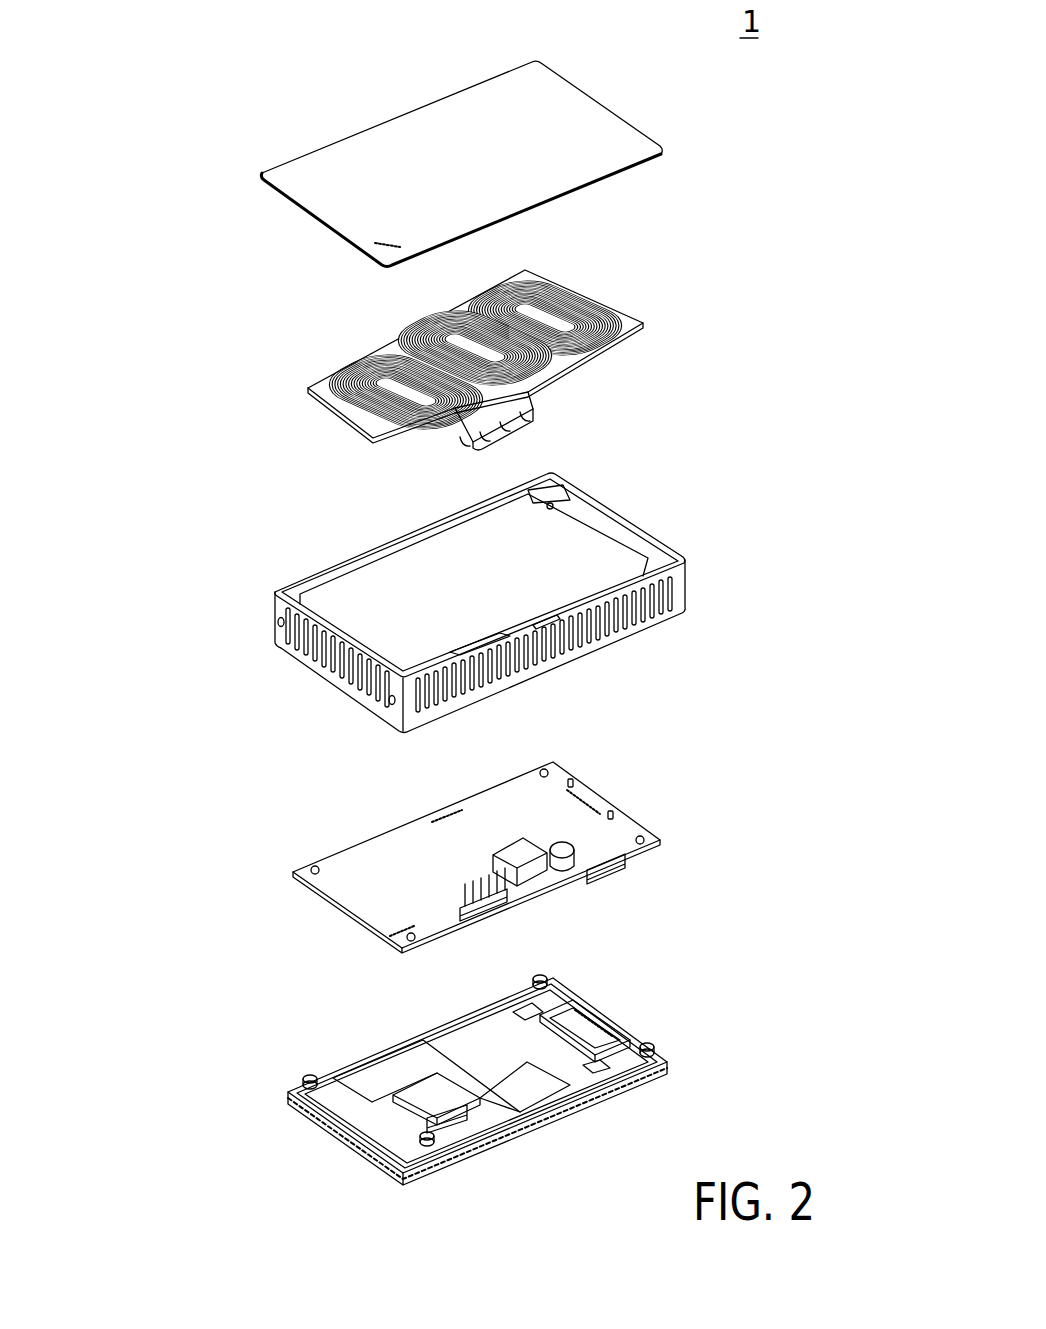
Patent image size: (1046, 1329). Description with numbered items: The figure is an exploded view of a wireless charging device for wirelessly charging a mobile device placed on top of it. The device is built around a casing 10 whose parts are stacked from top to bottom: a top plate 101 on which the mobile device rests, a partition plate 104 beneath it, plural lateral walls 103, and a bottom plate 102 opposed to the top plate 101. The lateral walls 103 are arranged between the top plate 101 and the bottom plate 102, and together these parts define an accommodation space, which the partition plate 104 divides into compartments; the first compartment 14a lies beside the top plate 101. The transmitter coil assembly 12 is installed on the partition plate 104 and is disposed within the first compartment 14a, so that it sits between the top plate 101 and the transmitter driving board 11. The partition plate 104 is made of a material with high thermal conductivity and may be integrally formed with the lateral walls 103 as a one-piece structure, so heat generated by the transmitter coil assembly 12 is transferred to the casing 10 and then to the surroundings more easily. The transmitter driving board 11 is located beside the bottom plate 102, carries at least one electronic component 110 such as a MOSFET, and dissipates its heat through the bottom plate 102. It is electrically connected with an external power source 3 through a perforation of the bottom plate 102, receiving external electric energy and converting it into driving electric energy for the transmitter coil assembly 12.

The casing 10 is at (205, 547).
The top plate 101 is at (327, 205).
The bottom plate 102 is at (328, 1090).
The lateral walls 103 is at (417, 708).
The partition plate 104 is at (355, 625).
The first compartment 14a is at (477, 556).
The transmitter coil assembly 12 is at (600, 290).
The transmitter driving board 11 is at (632, 832).
The electronic component 110 is at (525, 850).
The external power source 3 is at (587, 1037).